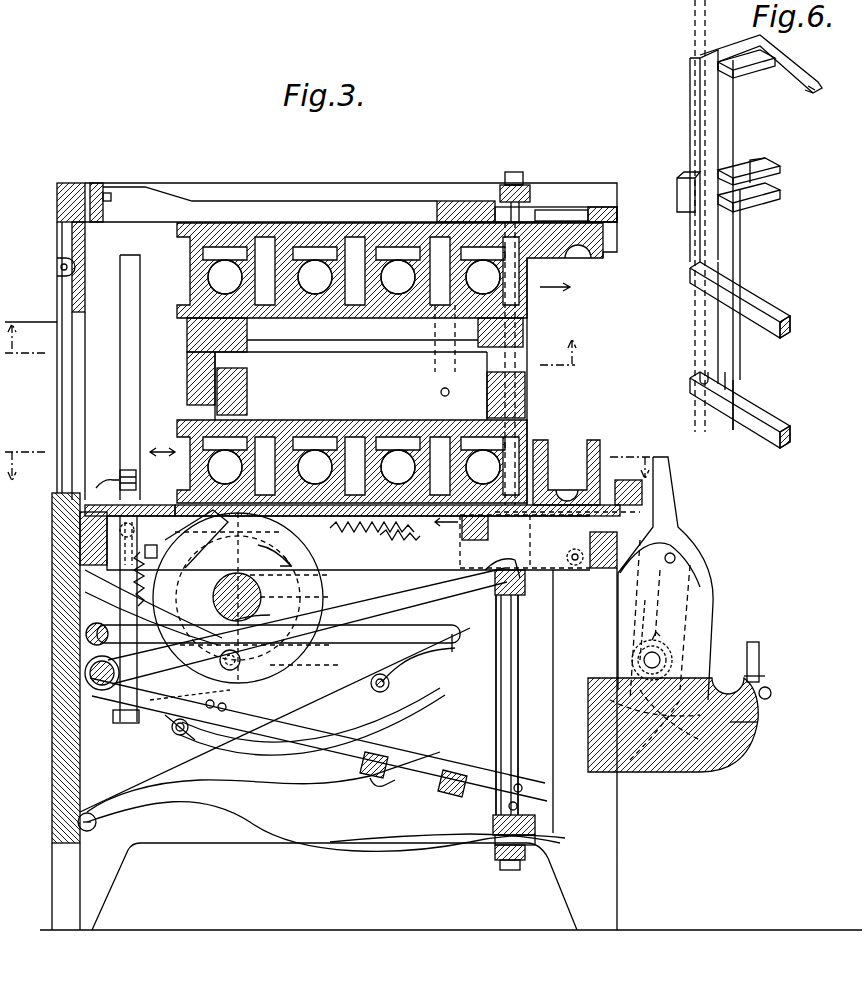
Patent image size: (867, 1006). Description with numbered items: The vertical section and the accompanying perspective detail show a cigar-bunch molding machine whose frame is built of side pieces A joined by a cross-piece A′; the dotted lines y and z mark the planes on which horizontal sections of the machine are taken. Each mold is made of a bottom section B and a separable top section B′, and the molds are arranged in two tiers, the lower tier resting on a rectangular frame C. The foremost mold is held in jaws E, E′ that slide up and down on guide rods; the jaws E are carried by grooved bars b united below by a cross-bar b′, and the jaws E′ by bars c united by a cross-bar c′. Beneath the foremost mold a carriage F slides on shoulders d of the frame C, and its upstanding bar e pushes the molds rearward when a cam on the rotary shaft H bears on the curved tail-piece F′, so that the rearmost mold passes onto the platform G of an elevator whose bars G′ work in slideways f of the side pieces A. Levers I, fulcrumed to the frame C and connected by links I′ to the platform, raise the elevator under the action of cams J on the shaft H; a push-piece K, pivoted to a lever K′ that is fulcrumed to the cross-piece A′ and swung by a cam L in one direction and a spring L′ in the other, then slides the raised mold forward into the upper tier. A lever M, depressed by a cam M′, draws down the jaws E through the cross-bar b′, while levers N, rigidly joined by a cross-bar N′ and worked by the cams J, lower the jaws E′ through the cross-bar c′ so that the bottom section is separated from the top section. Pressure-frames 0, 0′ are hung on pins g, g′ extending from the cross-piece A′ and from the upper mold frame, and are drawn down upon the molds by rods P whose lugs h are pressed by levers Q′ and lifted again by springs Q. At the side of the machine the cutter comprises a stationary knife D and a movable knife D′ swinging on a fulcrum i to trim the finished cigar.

In FIG. 3, the side pieces A is at (449, 576).
In FIG. 3, the cross-piece A′ is at (57, 200).
In FIG. 3, the pressure-frame 0 is at (351, 202).
In FIG. 3, the pressure-frame 0′ is at (370, 386).
In FIG. 3, the pin g is at (111, 198).
In FIG. 3, the pin g′ is at (247, 390).
In FIG. 3, the bottom section of mold B is at (370, 383).
In FIG. 3, the top section of mold B′ is at (318, 226).
In FIG. 3, the frame C is at (335, 541).
In FIG. 3, the rods P is at (445, 350).
In FIG. 3, the bars b is at (527, 356).
In FIG. 6, the bars b is at (704, 156).
In FIG. 3, the cross-bar b′ is at (525, 585).
In FIG. 6, the cross-bar b′ is at (740, 300).
In FIG. 3, the bars c is at (520, 657).
In FIG. 6, the bars c is at (734, 243).
In FIG. 3, the cross-bar c′ is at (535, 824).
In FIG. 6, the cross-bar c′ is at (740, 410).
In FIG. 3, the push-piece K is at (87, 361).
In FIG. 3, the lever K′ is at (40, 298).
In FIG. 3, the section line y y is at (295, 354).
In FIG. 3, the section line z z is at (326, 456).
In FIG. 3, the bar e is at (628, 484).
In FIG. 6, the jaws E is at (761, 64).
In FIG. 3, the jaws E′ is at (570, 222).
In FIG. 6, the jaws E′ is at (749, 188).
In FIG. 3, the slideways f is at (147, 488).
In FIG. 3, the elevator platform G is at (130, 501).
In FIG. 3, the bars G′ is at (136, 478).
In FIG. 3, the carriage F is at (407, 515).
In FIG. 3, the tail-piece F′ is at (547, 538).
In FIG. 3, the shoulders d is at (348, 538).
In FIG. 3, the cam L is at (241, 598).
In FIG. 3, the spring L′ is at (142, 543).
In FIG. 3, the rotary shaft H is at (244, 597).
In FIG. 3, the lever M is at (330, 600).
In FIG. 3, the cam M′ is at (290, 582).
In FIG. 3, the springs Q is at (413, 670).
In FIG. 3, the levers Q′ is at (273, 631).
In FIG. 3, the levers I is at (275, 720).
In FIG. 3, the links I′ is at (137, 673).
In FIG. 3, the cams J is at (237, 663).
In FIG. 3, the lugs h is at (460, 648).
In FIG. 3, the levers N is at (318, 744).
In FIG. 3, the cross-bar N′ is at (452, 780).
In FIG. 3, the stationary knife D is at (751, 670).
In FIG. 3, the movable knife D′ is at (675, 578).
In FIG. 3, the fulcrum i is at (665, 656).